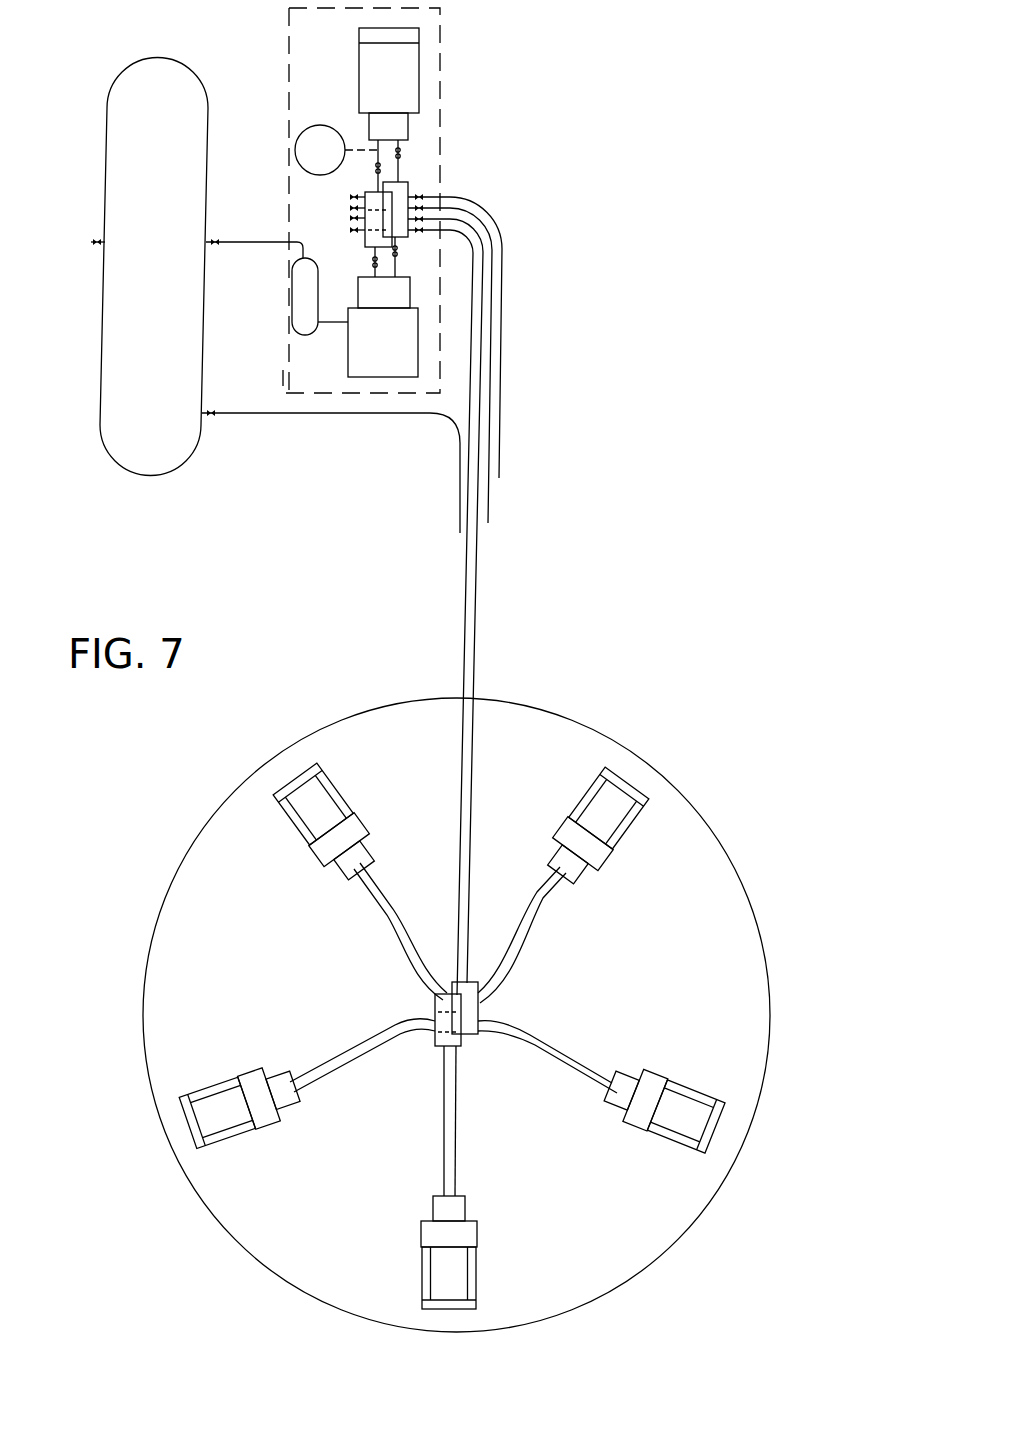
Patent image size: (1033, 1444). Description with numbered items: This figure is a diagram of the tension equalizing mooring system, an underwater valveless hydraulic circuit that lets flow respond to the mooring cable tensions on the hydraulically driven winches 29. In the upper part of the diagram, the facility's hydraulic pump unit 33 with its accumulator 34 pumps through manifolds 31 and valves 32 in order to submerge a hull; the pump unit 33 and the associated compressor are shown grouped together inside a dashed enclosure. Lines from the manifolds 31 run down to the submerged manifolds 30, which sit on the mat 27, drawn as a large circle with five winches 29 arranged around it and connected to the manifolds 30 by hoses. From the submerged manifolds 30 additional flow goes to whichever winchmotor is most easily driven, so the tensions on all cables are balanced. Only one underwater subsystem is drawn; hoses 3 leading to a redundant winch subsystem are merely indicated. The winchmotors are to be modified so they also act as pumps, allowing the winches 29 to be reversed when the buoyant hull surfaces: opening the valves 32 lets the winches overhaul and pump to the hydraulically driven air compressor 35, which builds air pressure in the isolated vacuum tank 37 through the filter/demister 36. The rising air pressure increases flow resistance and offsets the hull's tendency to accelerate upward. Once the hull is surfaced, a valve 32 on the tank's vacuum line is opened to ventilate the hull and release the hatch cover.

The hoses 3 is at (505, 415).
The mat 27 is at (702, 803).
The hydraulically driven winches 29 is at (245, 1065).
The submerged manifolds 30 is at (473, 983).
The manifolds 31 is at (367, 239).
The valves 32 is at (425, 195).
The hydraulic pump unit 33 is at (359, 66).
The accumulator 34 is at (300, 133).
The hydraulically driven air compressor 35 is at (347, 367).
The filter/demister 36 is at (300, 297).
The vacuum tank 37 is at (115, 138).